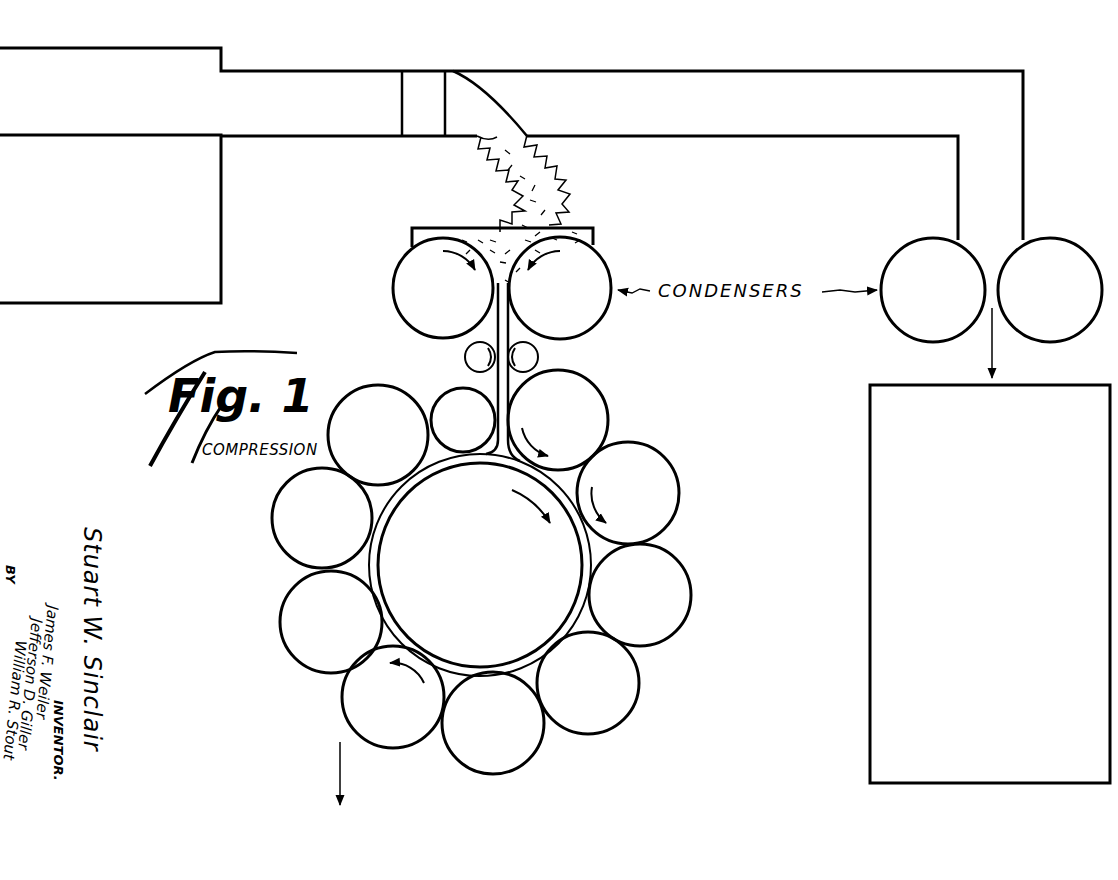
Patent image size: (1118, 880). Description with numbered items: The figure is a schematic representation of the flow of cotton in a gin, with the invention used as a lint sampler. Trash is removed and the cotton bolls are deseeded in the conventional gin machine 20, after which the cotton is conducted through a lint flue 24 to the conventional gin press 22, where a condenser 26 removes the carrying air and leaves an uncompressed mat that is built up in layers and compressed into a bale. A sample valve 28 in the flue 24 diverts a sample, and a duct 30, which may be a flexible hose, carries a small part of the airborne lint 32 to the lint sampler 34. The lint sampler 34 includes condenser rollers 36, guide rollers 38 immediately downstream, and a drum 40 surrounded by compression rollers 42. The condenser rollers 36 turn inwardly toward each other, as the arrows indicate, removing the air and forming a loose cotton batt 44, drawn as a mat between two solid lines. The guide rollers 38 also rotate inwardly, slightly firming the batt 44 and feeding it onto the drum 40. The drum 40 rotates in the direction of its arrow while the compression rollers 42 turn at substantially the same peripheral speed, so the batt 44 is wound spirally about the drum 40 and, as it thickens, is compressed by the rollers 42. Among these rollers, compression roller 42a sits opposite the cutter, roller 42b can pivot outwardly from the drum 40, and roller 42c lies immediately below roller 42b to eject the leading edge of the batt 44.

The gin machine 20 is at (74, 235).
The gin press 22 is at (997, 651).
The lint flue 24 is at (744, 114).
The condenser 26 is at (944, 301).
The sample valve 28 is at (422, 117).
The duct 30 is at (493, 177).
The airborne lint 32 is at (560, 182).
The lint sampler 34 is at (258, 525).
The condenser rollers 36 is at (454, 299).
The guide rollers 38 is at (468, 356).
The drum 40 is at (488, 557).
The compression rollers 42 is at (387, 446).
The compression roller 42a is at (335, 529).
The compression roller 42b is at (344, 633).
The compression roller 42c is at (406, 708).
The cotton batt 44 is at (538, 357).